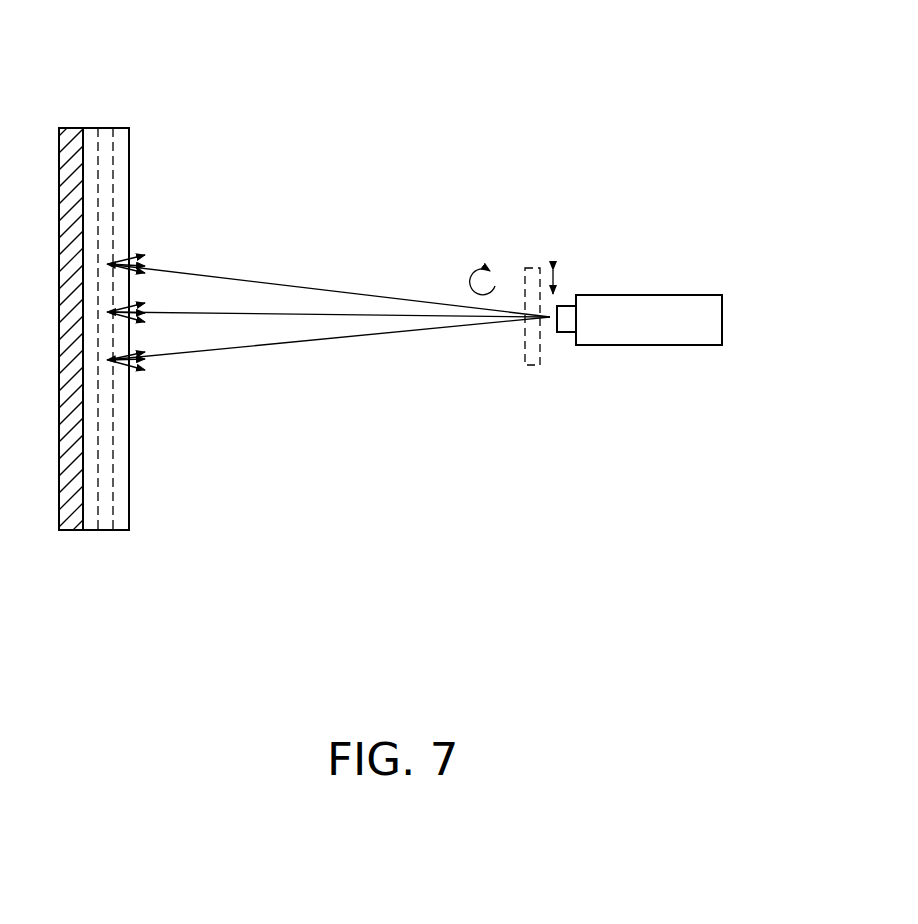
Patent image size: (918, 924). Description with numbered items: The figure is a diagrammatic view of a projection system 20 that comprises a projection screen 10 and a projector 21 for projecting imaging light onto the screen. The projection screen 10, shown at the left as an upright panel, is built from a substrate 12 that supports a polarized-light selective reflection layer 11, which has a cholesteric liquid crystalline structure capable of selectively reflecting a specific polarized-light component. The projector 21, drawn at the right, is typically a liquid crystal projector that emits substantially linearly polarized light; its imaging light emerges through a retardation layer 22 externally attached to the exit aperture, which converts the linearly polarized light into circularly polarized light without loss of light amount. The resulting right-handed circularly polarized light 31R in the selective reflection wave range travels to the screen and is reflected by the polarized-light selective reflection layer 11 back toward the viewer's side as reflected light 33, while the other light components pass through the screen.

The projection screen 10 is at (92, 78).
The polarized-light selective reflection layer 11 is at (106, 128).
The substrate 12 is at (72, 128).
The projection system 20 is at (700, 425).
The projector 21 is at (657, 295).
The retardation layer 22 is at (535, 268).
The right-handed circularly polarized light 31R is at (318, 290).
The reflected light 33 is at (135, 258).